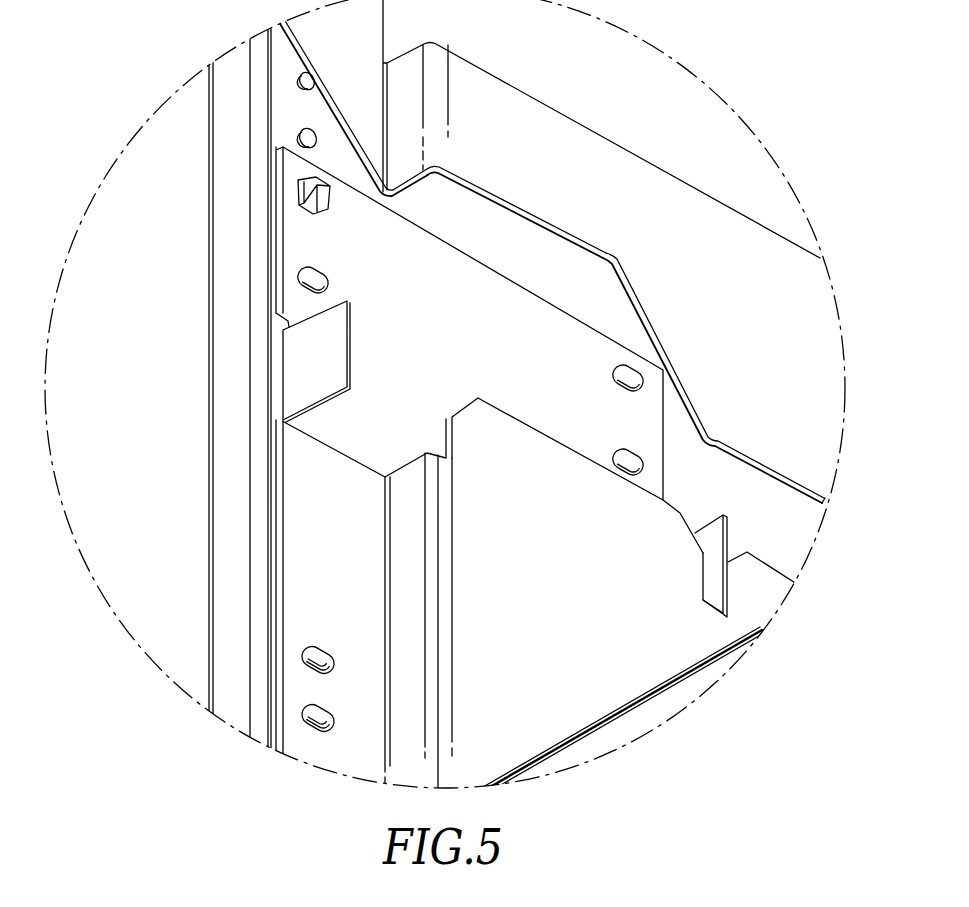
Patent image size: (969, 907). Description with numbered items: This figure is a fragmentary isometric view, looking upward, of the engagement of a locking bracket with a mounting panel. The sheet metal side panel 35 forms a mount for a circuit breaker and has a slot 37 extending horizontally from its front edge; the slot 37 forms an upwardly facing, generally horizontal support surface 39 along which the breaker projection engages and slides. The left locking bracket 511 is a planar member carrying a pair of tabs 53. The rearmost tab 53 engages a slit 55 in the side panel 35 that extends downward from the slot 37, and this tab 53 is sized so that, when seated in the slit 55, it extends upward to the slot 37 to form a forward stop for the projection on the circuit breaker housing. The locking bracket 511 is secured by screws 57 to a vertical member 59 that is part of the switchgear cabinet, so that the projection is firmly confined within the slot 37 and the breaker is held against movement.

The side panel 35 is at (601, 156).
The slot 37 is at (793, 517).
The support surface 39 is at (775, 568).
The left locking bracket 511 is at (450, 288).
The tab 53 is at (302, 362).
The slit 55 is at (708, 582).
The screw 57 is at (323, 197).
The vertical member 59 is at (223, 258).